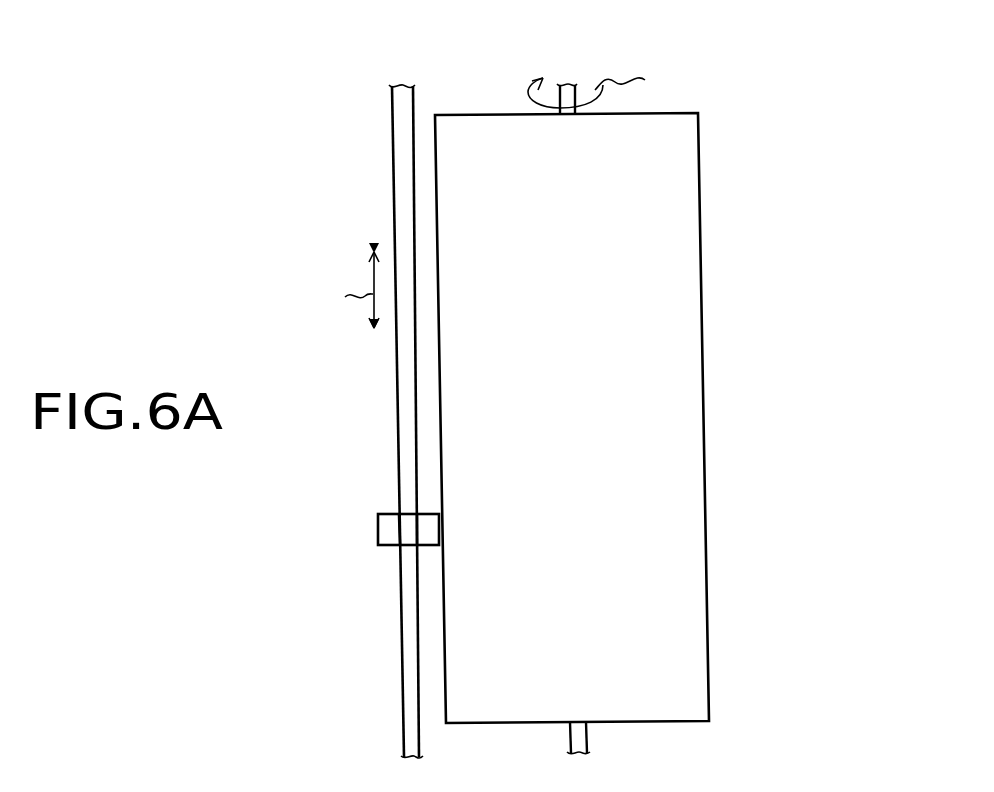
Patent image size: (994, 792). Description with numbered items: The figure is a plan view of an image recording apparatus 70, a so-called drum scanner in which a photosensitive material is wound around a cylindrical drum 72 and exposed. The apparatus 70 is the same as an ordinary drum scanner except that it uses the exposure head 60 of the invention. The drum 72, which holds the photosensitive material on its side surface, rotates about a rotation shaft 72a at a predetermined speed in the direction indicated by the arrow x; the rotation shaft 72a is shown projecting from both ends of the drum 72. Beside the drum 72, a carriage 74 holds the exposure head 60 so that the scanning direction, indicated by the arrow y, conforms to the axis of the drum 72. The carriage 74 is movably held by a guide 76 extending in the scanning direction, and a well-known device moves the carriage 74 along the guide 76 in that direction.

The image recording apparatus 70 is at (801, 106).
The drum 72 is at (690, 366).
The rotation shaft 72a is at (568, 88).
The carriage 74 is at (380, 527).
The guide 76 is at (405, 672).
The exposure head 60 is at (413, 522).